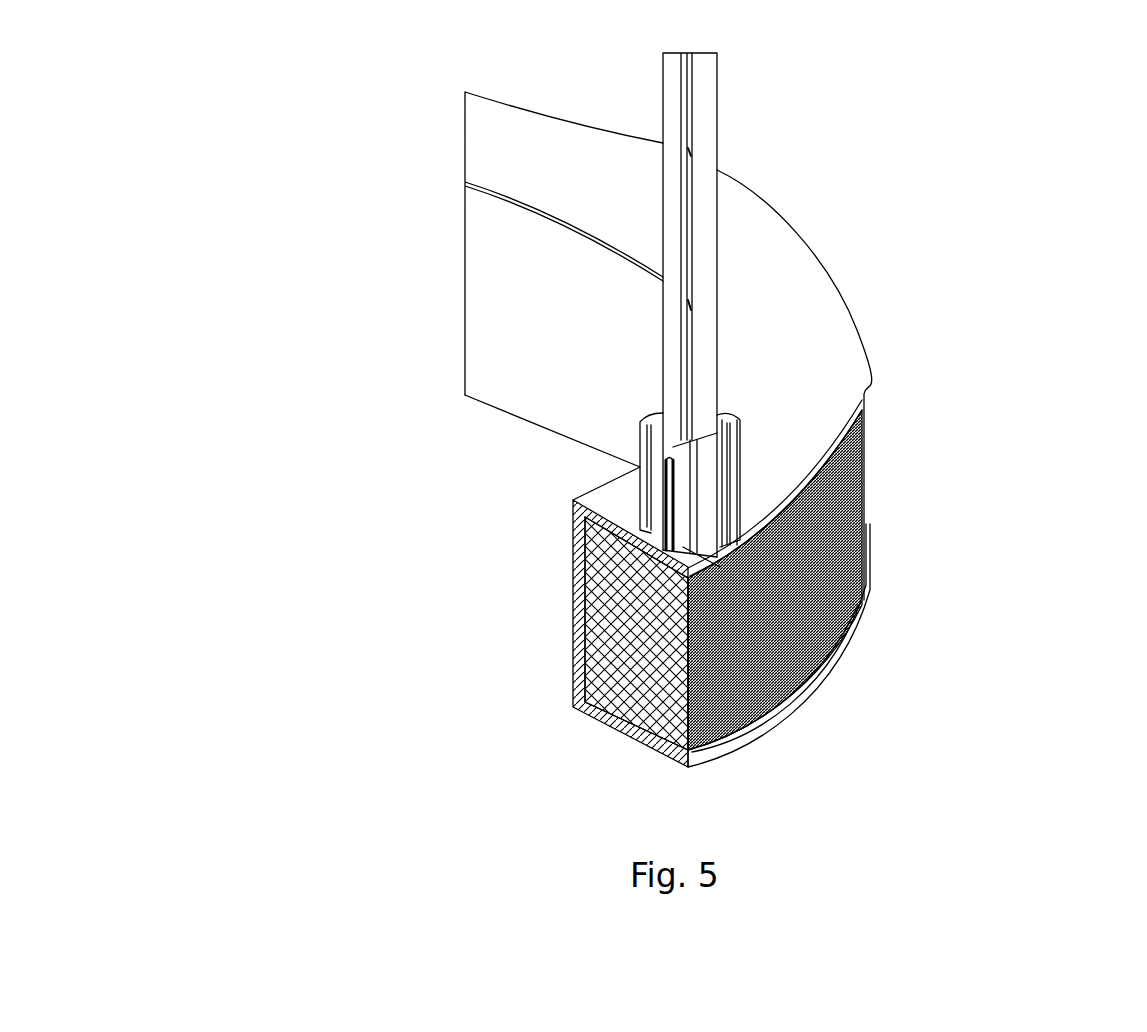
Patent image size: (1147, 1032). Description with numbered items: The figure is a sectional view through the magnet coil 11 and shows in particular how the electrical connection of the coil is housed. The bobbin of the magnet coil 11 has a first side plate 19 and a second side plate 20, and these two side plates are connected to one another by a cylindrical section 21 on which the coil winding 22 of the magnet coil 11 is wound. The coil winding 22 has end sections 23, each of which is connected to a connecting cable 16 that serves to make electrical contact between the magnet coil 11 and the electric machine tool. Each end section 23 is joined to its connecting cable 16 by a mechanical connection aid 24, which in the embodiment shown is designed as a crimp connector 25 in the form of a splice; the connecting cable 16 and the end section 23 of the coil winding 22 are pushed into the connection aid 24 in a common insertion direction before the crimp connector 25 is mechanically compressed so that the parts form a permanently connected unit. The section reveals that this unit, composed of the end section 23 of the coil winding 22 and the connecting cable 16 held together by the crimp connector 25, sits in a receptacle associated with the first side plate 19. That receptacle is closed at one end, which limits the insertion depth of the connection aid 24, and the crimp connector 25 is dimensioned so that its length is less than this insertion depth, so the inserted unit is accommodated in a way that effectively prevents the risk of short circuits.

The magnet coil 11 is at (767, 602).
The connecting cable 16 is at (678, 262).
The first side plate 19 is at (798, 313).
The second side plate 20 is at (773, 717).
The cylindrical section 21 is at (573, 580).
The coil winding 22 is at (812, 602).
The end section 23 is at (673, 480).
The mechanical connection aid 24 is at (573, 497).
The crimp connector 25 is at (673, 513).